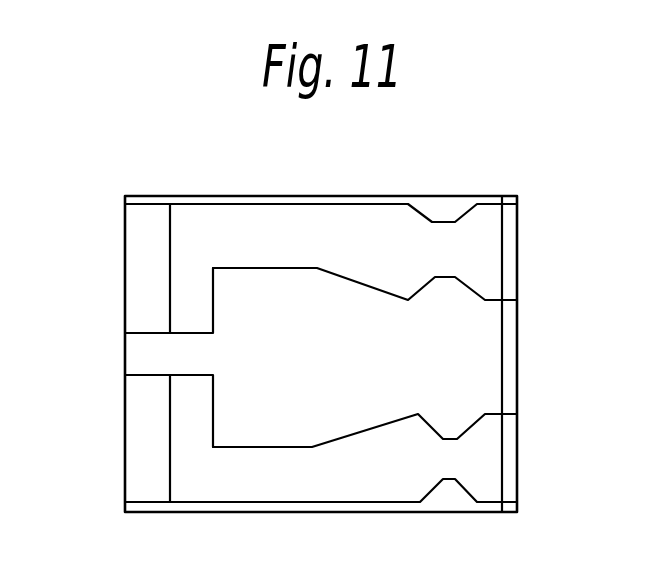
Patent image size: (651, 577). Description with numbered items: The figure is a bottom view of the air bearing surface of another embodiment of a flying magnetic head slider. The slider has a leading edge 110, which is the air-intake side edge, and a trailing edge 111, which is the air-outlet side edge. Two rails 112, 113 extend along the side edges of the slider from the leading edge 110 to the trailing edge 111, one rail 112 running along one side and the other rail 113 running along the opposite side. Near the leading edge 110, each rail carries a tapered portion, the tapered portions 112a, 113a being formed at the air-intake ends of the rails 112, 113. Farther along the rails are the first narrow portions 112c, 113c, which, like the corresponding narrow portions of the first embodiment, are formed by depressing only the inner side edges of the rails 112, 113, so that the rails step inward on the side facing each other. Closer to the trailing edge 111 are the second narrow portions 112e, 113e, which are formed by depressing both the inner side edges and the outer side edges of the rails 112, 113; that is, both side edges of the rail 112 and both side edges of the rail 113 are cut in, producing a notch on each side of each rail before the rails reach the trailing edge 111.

The leading edge 110 is at (125, 356).
The trailing edge 111 is at (520, 339).
The rail 112 is at (327, 223).
The tapered portion 112a is at (140, 260).
The first narrow portion 112c is at (256, 244).
The second narrow portion 112e is at (450, 251).
The rail 113 is at (357, 478).
The tapered portion 113a is at (140, 452).
The first narrow portion 113c is at (262, 468).
The second narrow portion 113e is at (447, 455).